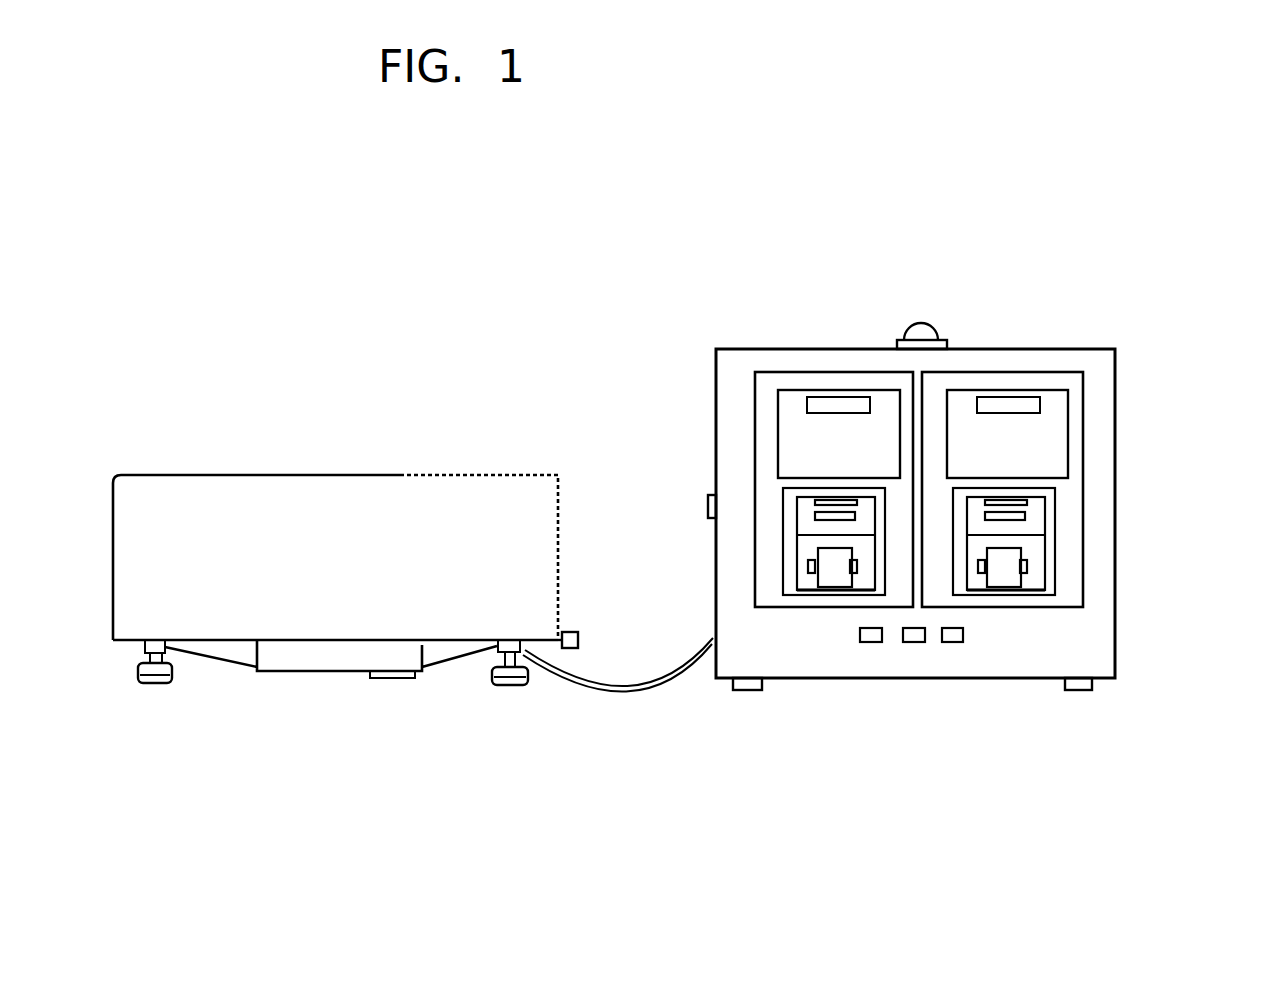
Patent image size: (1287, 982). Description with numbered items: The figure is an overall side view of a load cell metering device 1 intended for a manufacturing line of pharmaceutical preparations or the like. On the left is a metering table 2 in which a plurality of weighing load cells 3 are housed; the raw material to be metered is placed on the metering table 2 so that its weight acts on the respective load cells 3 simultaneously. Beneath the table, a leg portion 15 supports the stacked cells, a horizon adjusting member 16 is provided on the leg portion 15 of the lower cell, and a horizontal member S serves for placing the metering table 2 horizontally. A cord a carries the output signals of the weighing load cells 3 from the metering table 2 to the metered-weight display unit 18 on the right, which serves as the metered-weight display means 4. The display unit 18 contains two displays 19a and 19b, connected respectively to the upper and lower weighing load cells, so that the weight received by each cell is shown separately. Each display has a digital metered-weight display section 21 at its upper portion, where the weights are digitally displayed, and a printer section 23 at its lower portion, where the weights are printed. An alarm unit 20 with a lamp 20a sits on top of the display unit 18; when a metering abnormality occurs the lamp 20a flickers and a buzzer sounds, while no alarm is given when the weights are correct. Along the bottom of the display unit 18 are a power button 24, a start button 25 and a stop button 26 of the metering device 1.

The load cell metering device 1 is at (633, 418).
The metering table 2 is at (290, 457).
The weighing load cell 3 is at (325, 698).
The metered-weight display means 4 is at (968, 310).
The leg portion 15 is at (497, 647).
The horizon adjusting member 16 is at (505, 685).
The metered-weight display unit 18 is at (1130, 487).
The display 19a is at (760, 347).
The display 19b is at (1065, 355).
The alarm unit 20 is at (923, 253).
The lamp 20a is at (913, 323).
The digital metered-weight display section 21 is at (825, 400).
The printer section 23 is at (800, 580).
The power button 24 is at (870, 643).
The start button 25 is at (913, 643).
The stop button 26 is at (955, 643).
The horizontal member S is at (572, 632).
The cord a is at (625, 688).